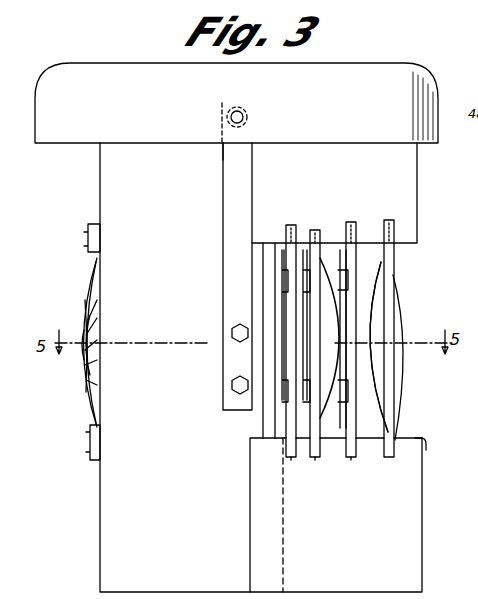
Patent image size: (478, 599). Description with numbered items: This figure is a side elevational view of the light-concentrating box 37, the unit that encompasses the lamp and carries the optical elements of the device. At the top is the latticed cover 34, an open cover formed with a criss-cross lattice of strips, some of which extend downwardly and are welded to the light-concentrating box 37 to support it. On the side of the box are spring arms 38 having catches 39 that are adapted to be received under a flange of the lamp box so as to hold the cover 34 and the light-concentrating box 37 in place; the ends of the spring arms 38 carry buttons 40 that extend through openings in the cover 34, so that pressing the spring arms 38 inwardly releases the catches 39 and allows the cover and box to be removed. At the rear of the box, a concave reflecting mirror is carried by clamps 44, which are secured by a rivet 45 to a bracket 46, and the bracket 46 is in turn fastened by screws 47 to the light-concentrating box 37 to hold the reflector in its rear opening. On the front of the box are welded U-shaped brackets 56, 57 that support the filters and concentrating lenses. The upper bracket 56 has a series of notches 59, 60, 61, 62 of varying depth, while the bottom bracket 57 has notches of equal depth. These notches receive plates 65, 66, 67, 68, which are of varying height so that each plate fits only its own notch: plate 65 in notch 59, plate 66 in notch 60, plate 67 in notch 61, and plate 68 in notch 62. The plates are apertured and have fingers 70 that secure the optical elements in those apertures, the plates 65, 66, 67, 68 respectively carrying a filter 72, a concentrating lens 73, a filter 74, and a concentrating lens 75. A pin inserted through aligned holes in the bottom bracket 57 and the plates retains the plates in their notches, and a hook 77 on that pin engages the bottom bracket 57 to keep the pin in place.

The latticed cover 34 is at (425, 70).
The light-concentrating box 37 is at (108, 181).
The spring arms 38 is at (228, 226).
The catches 39 is at (228, 164).
The buttons 40 is at (248, 115).
The clamps 44 is at (90, 330).
The rivet 45 is at (82, 342).
The bracket 46 is at (88, 276).
The screws 47 is at (84, 240).
The U-shaped bracket 56 is at (400, 183).
The U-shaped bracket 57 is at (405, 535).
The notch 59 is at (290, 222).
The notch 60 is at (315, 228).
The notch 61 is at (351, 220).
The notch 62 is at (389, 218).
The plate 65 is at (291, 460).
The plate 66 is at (315, 460).
The plate 67 is at (351, 460).
The plate 68 is at (388, 277).
The fingers 70 is at (305, 283).
The filter 72 is at (283, 302).
The concentrating lens 73 is at (335, 275).
The filter 74 is at (345, 422).
The concentrating lens 75 is at (378, 318).
The hook 77 is at (425, 437).